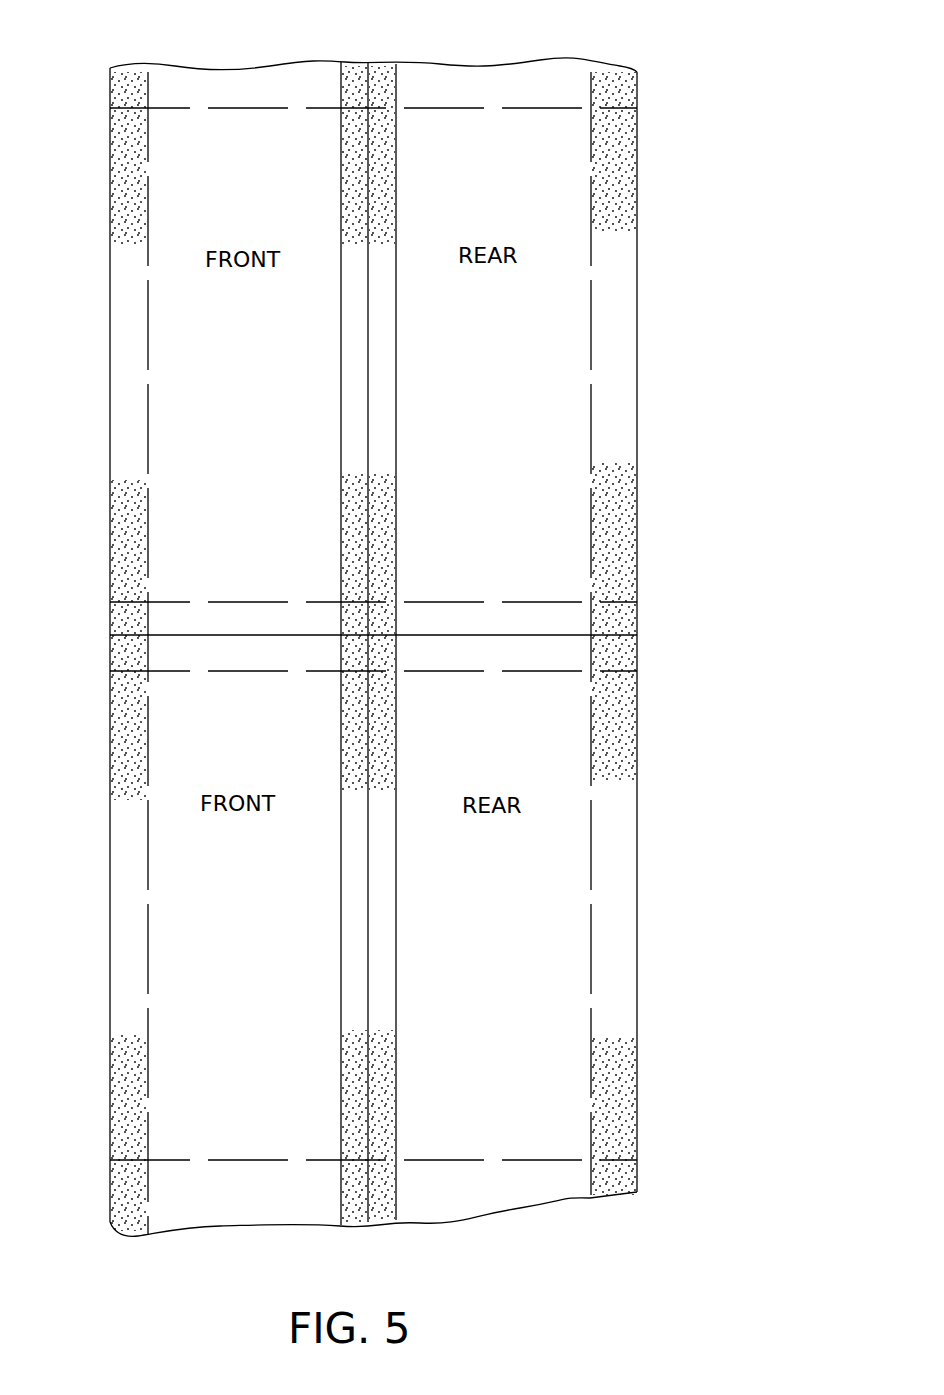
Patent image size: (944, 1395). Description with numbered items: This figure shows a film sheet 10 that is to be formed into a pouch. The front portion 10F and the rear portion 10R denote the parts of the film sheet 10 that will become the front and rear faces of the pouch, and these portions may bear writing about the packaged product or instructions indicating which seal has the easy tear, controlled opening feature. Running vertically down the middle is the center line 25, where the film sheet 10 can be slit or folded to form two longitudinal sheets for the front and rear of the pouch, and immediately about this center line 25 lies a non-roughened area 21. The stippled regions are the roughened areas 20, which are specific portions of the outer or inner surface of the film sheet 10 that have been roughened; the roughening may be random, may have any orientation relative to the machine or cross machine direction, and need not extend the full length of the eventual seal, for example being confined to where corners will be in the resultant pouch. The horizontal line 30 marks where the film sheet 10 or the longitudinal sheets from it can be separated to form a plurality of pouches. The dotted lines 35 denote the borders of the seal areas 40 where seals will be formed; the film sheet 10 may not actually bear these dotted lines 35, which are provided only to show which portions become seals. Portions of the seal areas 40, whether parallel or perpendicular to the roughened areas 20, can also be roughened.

The film sheet 10 is at (645, 477).
The front portion 10F is at (200, 432).
The rear portion 10R is at (555, 340).
The roughened areas 20 is at (385, 80).
The non-roughened area 21 is at (387, 341).
The center line 25 is at (368, 75).
The horizontal line 30 is at (620, 640).
The dotted lines 35 is at (189, 108).
The seal areas 40 is at (530, 80).